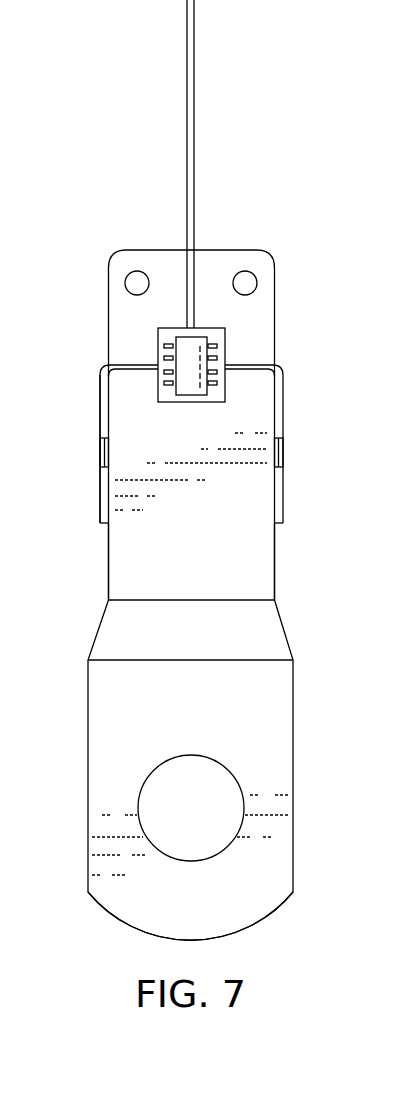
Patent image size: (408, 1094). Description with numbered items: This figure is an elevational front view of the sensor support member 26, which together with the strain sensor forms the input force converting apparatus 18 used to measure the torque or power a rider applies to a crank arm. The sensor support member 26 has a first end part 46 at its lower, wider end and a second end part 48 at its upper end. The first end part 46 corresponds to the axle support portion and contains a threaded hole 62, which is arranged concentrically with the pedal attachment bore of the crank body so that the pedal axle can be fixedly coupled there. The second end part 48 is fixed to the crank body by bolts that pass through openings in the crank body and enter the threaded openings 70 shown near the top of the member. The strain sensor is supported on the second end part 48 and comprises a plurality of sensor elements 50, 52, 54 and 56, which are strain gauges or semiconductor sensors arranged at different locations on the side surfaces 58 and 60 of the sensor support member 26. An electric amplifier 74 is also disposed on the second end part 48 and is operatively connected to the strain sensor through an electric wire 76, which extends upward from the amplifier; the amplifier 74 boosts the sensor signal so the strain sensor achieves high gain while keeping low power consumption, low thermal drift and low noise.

The input force converting apparatus 18 is at (86, 186).
The electric wire 76 is at (195, 31).
The second end part 48 is at (252, 334).
The threaded openings 70 is at (133, 272).
The sensor support member 26 is at (274, 575).
The side surface 58 is at (274, 542).
The side surface 60 is at (107, 570).
The threaded hole 62 is at (193, 755).
The first end part 46 is at (294, 863).
The sensor element 52 is at (285, 410).
The sensor element 56 is at (98, 410).
The sensor element 54 is at (98, 497).
The sensor element 50 is at (285, 500).
The electric amplifier 74 is at (190, 402).